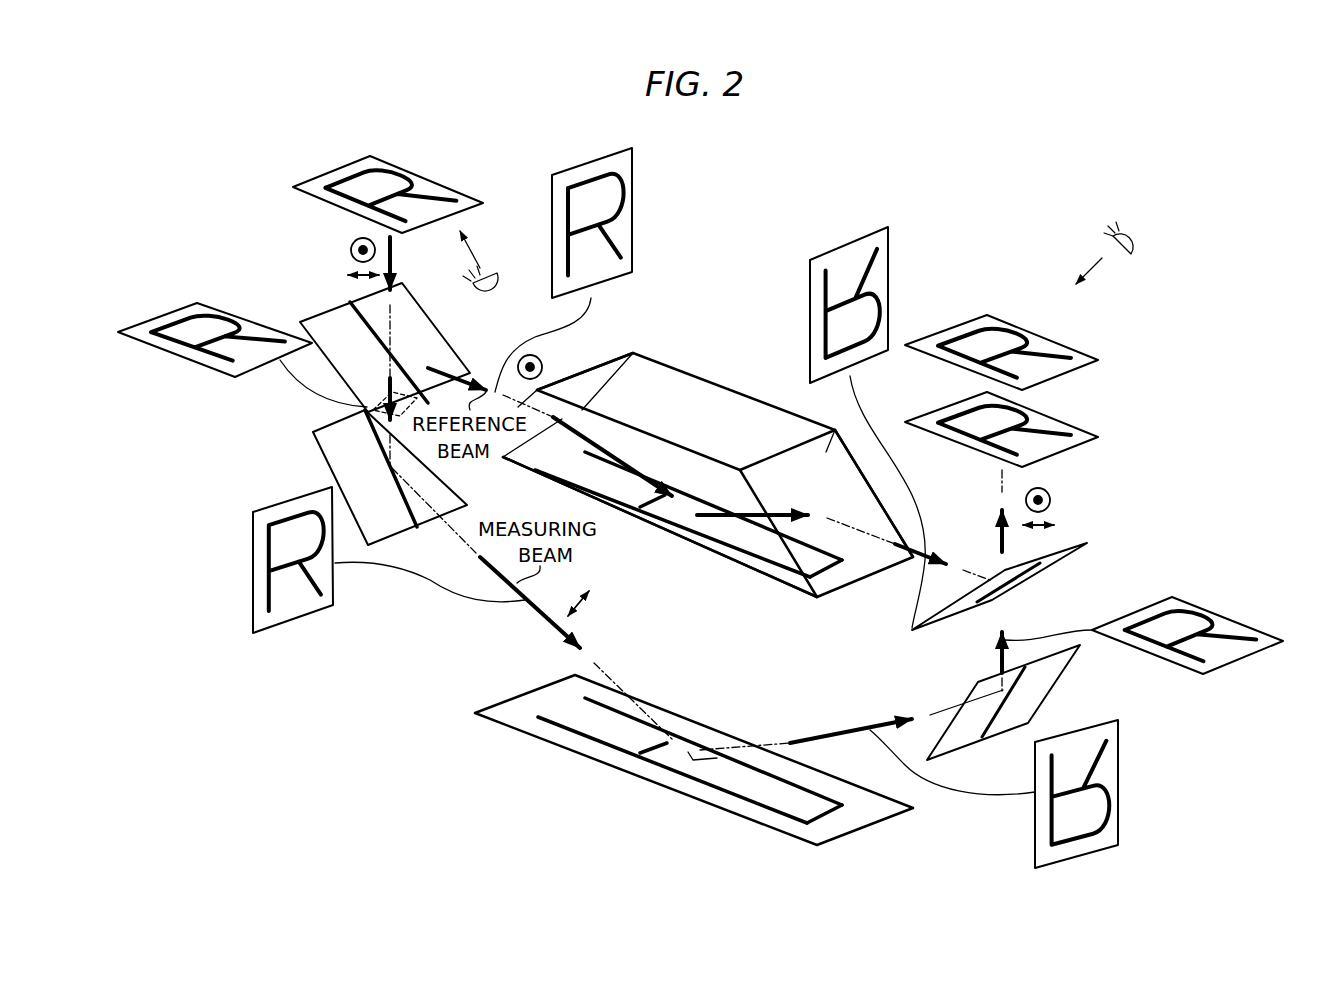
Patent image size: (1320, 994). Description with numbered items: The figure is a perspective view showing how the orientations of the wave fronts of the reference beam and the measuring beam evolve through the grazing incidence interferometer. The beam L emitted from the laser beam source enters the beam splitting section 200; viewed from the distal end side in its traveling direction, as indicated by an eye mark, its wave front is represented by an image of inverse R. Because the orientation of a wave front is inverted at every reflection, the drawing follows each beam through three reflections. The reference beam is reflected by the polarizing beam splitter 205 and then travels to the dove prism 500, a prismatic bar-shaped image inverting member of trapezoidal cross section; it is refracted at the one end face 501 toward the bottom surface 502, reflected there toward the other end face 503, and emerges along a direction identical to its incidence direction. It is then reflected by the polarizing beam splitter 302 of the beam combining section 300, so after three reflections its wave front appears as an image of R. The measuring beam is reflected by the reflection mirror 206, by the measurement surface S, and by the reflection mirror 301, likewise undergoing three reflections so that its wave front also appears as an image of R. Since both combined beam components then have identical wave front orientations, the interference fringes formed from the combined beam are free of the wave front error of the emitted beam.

The beam splitting section 200 is at (317, 406).
The polarizing beam splitter 205 is at (323, 317).
The reflection mirror 206 is at (322, 455).
The dove prism 500 is at (708, 459).
The one end face 501 is at (614, 355).
The bottom surface 502 is at (667, 544).
The other end face 503 is at (828, 428).
The beam combining section 300 is at (1058, 615).
The reflection mirror 301 is at (1055, 662).
The polarizing beam splitter 302 is at (1047, 567).
The beam L is at (396, 262).
The measurement surface S is at (793, 828).